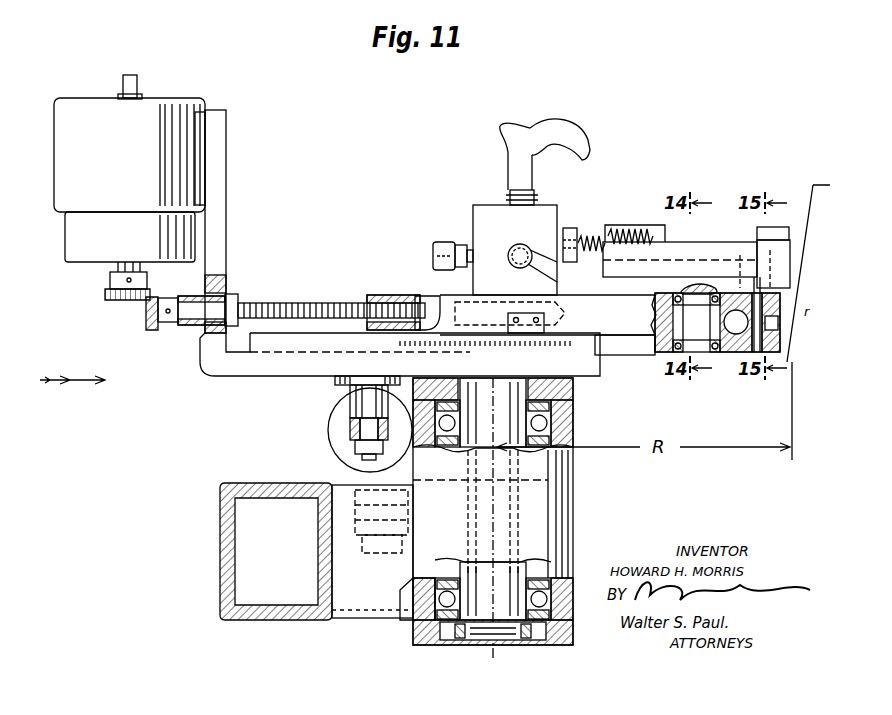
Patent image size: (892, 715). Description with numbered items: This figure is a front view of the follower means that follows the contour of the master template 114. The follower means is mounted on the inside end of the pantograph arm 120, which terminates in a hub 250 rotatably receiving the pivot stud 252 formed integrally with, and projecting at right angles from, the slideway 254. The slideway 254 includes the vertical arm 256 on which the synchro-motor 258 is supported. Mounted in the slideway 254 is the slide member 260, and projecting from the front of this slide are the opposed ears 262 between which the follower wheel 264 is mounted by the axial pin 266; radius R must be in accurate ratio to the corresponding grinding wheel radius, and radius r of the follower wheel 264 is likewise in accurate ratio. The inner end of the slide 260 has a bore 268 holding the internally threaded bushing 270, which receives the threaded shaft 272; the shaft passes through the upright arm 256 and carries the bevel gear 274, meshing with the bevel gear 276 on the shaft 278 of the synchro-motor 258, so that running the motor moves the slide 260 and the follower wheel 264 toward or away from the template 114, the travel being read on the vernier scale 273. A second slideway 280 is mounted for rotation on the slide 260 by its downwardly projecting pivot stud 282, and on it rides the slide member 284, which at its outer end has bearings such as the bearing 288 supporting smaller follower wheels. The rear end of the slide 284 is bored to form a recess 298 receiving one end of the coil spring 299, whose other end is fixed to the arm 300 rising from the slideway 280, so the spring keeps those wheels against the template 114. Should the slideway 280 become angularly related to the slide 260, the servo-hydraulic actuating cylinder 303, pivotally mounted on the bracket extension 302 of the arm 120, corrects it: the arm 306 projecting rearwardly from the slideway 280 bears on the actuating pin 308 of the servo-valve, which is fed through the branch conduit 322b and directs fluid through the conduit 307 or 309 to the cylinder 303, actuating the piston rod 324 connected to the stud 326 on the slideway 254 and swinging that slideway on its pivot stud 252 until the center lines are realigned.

The master template 114 is at (796, 200).
The pantograph arm 120 is at (280, 485).
The hub 250 is at (573, 486).
The pivot stud 252 is at (512, 430).
The slideway 254 is at (600, 382).
The vertical arm 256 is at (226, 152).
The synchro-motor 258 is at (92, 92).
The slide member 260 is at (648, 340).
The opposed ears 262 is at (782, 300).
The follower wheel 264 is at (780, 328).
The axial pin 266 is at (757, 277).
The bore 268 is at (432, 300).
The internally threaded bushing 270 is at (366, 284).
The threaded shaft 272 is at (258, 303).
The vernier scale 273 is at (508, 333).
The bevel gear 274 is at (148, 330).
The bevel gear 276 is at (122, 300).
The shaft 278 is at (118, 272).
The slideway 280 is at (606, 298).
The pivot stud 282 is at (698, 282).
The slide member 284 is at (716, 252).
The bearing 288 is at (773, 238).
The recess 298 is at (630, 232).
The coil spring 299 is at (595, 236).
The arm 300 is at (572, 228).
The bracket extension 302 is at (435, 518).
The servo-hydraulic actuating cylinder 303 is at (355, 471).
The arm 306 is at (534, 274).
The conduit 307 is at (588, 138).
The actuating pin 308 is at (518, 248).
The conduit 309 is at (510, 157).
The branch conduit 322b is at (446, 242).
The piston rod 324 is at (348, 430).
The stud 326 is at (358, 398).